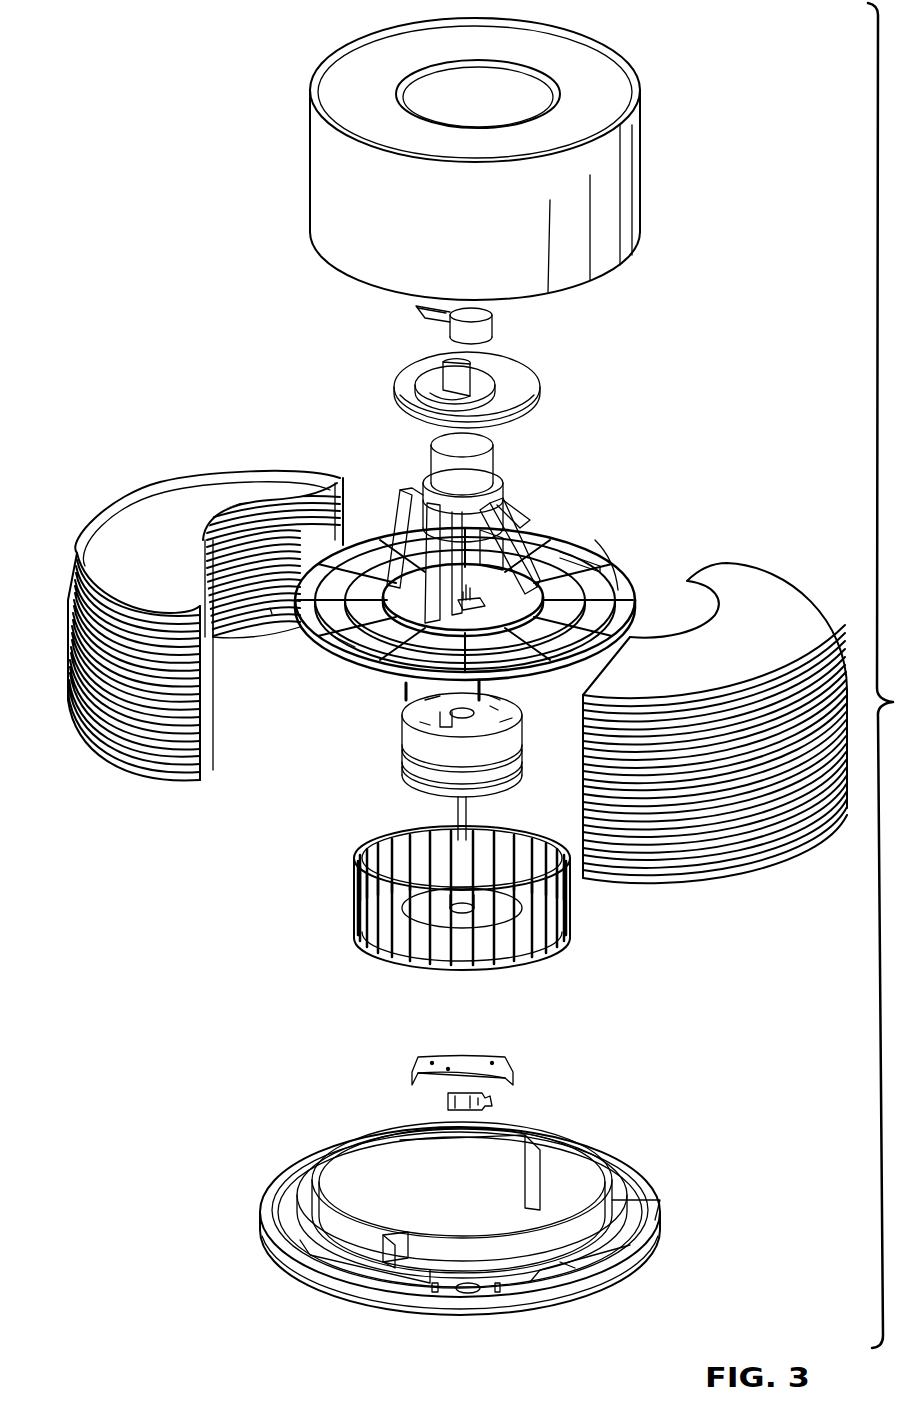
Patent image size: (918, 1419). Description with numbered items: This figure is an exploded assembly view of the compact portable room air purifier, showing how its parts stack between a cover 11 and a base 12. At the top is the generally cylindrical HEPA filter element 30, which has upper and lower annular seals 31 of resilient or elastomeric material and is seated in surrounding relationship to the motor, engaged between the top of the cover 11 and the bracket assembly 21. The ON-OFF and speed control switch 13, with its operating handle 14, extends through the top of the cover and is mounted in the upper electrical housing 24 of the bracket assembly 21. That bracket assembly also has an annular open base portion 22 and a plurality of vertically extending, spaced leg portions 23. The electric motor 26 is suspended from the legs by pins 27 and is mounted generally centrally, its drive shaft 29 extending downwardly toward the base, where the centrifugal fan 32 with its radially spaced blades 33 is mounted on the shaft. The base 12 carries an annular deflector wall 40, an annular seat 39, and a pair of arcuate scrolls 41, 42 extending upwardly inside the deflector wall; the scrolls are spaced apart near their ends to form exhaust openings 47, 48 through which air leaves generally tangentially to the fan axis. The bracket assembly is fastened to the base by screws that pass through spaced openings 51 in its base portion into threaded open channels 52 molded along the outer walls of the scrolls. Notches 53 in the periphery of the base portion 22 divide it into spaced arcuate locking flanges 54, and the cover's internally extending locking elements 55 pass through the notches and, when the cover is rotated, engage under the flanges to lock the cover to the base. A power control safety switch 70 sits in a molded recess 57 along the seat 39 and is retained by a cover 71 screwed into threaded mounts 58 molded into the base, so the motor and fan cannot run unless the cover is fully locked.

The cover 11 is at (780, 612).
The base 12 is at (300, 1296).
The ON-OFF and speed control switch 13 is at (478, 596).
The operating handle 14 is at (492, 328).
The bracket assembly 21 is at (405, 462).
The annular open base portion 22 is at (392, 652).
The leg portions 23 is at (538, 520).
The upper electrical housing 24 is at (495, 455).
The electric motor 26 is at (410, 770).
The pins 27 is at (404, 700).
The drive shaft 29 is at (455, 810).
The HEPA filter element 30 is at (298, 233).
The upper and lower annular seals 31 is at (633, 100).
The centrifugal fan 32 is at (350, 876).
The blades 33 is at (548, 950).
The annular seat 39 is at (575, 1268).
The annular deflector wall 40 is at (300, 1215).
The scroll 41 is at (335, 1158).
The scroll 42 is at (648, 1206).
The exhaust opening 47 is at (410, 1260).
The exhaust opening 48 is at (545, 1175).
The spaced openings 51 is at (608, 562).
The threaded open channels 52 is at (305, 1257).
The notches 53 is at (597, 536).
The arcuate locking flanges 54 is at (630, 583).
The locking elements 55 is at (270, 610).
The molded recess 57 is at (470, 1292).
The threaded mounts 58 is at (438, 1290).
The power control safety switch 70 is at (435, 1100).
The cover 71 is at (395, 1068).